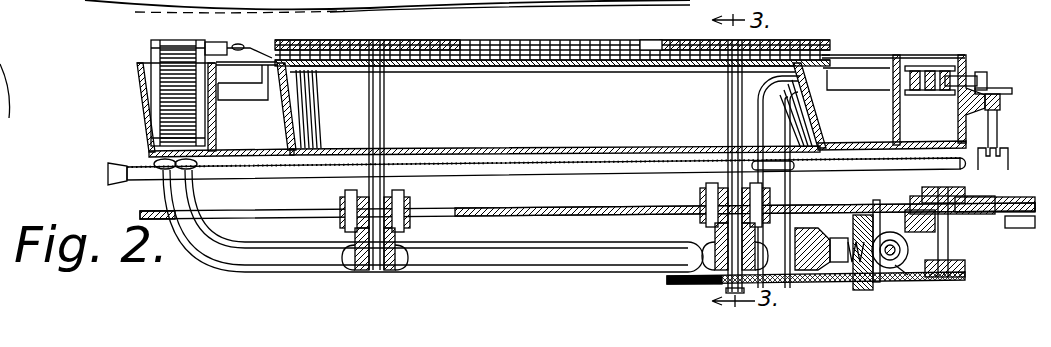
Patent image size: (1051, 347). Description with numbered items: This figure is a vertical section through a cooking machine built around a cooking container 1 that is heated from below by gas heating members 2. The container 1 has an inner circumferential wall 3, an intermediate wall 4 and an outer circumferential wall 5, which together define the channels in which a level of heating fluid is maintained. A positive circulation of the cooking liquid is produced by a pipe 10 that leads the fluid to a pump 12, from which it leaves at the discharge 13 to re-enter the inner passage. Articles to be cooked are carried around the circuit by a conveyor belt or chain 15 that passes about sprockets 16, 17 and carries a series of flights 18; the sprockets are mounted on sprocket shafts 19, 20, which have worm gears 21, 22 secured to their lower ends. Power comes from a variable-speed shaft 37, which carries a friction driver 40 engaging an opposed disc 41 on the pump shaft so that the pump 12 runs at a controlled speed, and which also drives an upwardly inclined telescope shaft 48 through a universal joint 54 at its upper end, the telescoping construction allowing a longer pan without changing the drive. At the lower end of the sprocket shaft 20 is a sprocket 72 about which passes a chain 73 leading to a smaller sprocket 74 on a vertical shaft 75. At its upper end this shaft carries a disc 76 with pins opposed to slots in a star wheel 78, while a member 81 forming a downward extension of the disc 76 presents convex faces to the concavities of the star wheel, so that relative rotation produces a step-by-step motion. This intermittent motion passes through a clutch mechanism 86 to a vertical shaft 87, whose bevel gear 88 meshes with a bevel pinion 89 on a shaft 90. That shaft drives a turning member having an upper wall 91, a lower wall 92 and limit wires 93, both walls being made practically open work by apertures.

The cooking container 1 is at (555, 110).
The gas heating members 2 is at (92, 181).
The inner circumferential wall 3 is at (293, 105).
The intermediate wall 4 is at (216, 125).
The outer circumferential wall 5 is at (138, 98).
The pipe 10 is at (210, 249).
The pump 12 is at (784, 285).
The discharge 13 is at (770, 97).
The conveyor belt or chain 15 is at (574, 41).
The sprocket 16 is at (430, 41).
The sprocket 17 is at (674, 42).
The flights 18 is at (860, 68).
The sprocket shaft 19 is at (385, 136).
The sprocket shaft 20 is at (729, 122).
The worm gear 21 is at (398, 271).
The worm gear 22 is at (697, 250).
The shaft 37 is at (890, 270).
The friction driver 40 is at (908, 275).
The opposed disc 41 is at (862, 230).
The telescope shaft 48 is at (618, 183).
The universal joint 54 is at (250, 46).
The sprocket 72 is at (680, 285).
The chain 73 is at (862, 285).
The smaller sprocket 74 is at (958, 282).
The vertical shaft 75 is at (950, 243).
The disc 76 is at (912, 205).
The star wheel 78 is at (1003, 232).
The member 81 is at (912, 232).
The clutch mechanism 86 is at (1008, 165).
The vertical shaft 87 is at (998, 120).
The bevel gear 88 is at (1003, 88).
The bevel pinion 89 is at (982, 72).
The shaft 90 is at (958, 75).
The upper wall 91 is at (909, 66).
The lower wall 92 is at (948, 99).
The limit wires 93 is at (930, 70).